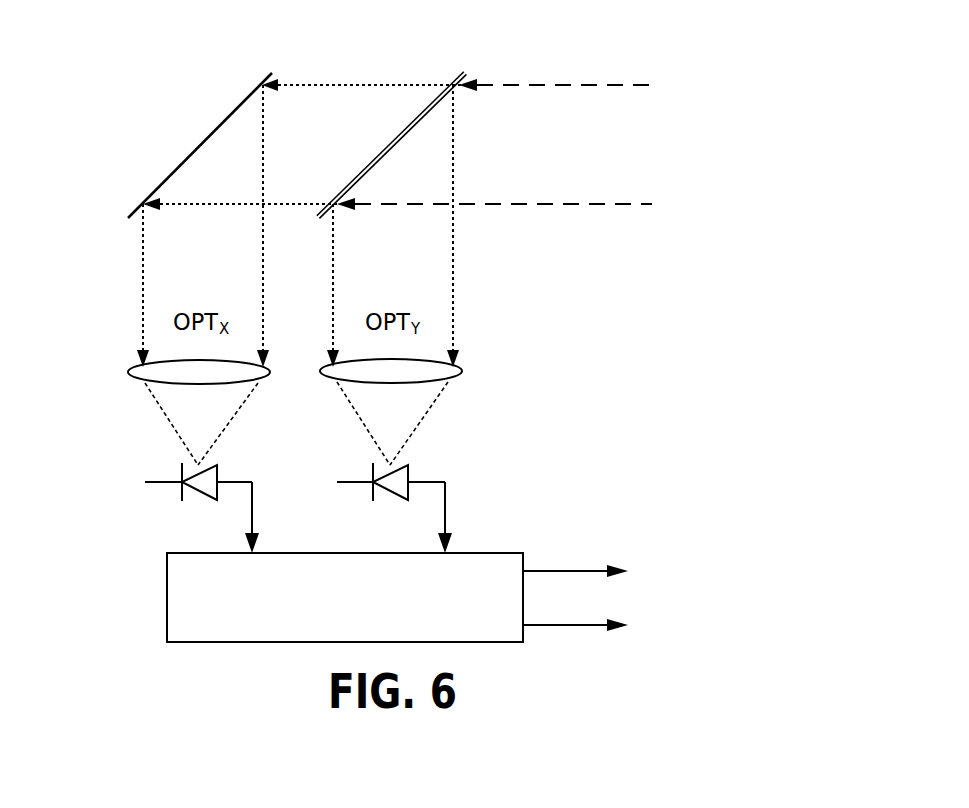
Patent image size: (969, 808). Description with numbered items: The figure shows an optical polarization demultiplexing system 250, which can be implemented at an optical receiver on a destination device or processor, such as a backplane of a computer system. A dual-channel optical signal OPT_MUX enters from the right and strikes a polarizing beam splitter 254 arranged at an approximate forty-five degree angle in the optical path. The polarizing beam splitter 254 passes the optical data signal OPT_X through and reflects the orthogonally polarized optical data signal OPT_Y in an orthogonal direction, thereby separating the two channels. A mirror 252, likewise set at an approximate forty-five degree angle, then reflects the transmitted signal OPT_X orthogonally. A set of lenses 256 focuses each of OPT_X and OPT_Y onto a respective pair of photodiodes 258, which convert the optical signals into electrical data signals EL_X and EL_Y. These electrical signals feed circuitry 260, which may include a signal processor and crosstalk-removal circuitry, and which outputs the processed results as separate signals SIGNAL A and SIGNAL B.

The optical polarization demultiplexing system 250 is at (135, 46).
The mirror 252 is at (213, 130).
The polarizing beam splitter 254 is at (455, 77).
The lenses 256 is at (134, 370).
The photodiodes 258 is at (217, 467).
The circuitry 260 is at (178, 553).